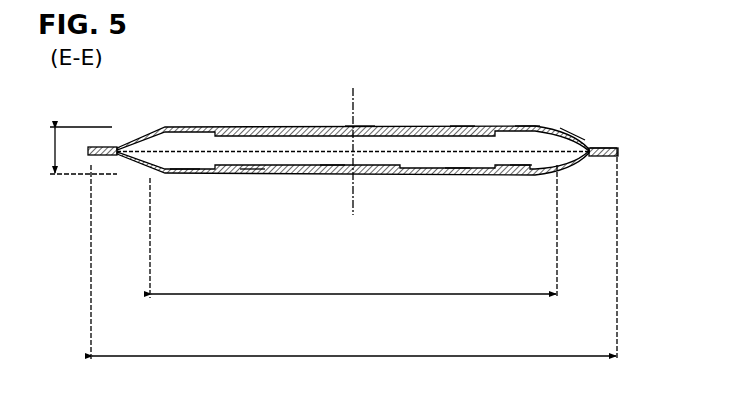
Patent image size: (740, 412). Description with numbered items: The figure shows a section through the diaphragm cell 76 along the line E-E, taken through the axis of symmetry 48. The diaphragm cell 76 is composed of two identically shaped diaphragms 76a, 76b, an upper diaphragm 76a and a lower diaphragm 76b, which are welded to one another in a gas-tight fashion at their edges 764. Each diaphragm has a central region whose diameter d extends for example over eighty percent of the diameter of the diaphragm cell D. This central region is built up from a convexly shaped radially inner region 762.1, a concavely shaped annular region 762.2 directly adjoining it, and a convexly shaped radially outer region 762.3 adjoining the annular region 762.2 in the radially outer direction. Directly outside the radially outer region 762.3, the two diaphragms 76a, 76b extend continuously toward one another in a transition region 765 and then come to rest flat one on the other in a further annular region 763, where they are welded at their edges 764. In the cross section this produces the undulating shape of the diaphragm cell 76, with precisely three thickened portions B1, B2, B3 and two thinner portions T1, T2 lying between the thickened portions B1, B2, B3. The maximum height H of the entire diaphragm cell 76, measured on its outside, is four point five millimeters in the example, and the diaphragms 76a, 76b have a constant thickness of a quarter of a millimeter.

The diaphragm cell 76 is at (225, 79).
The diaphragm 76a is at (146, 132).
The diaphragm 76b is at (134, 174).
The axis of symmetry 48 is at (352, 100).
The radially inner region 762.1 is at (359, 126).
The annular region 762.2 is at (462, 126).
The radially outer region 762.3 is at (527, 126).
The transition region 765 is at (573, 137).
The further annular region 763 is at (605, 148).
The edges 764 is at (619, 152).
The thickened portion B1 is at (178, 164).
The thinner portion T1 is at (253, 164).
The thickened portion B2 is at (333, 164).
The thinner portion T2 is at (457, 164).
The thickened portion B3 is at (527, 162).
The maximum height H is at (52, 152).
The diameter of the central region d is at (353, 293).
The diameter of the diaphragm cell D is at (352, 355).